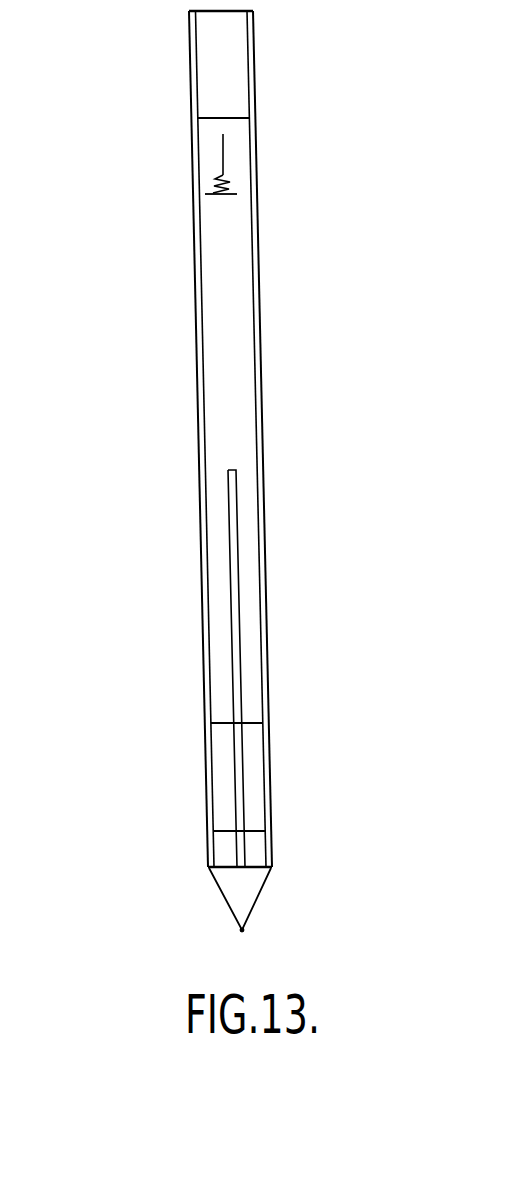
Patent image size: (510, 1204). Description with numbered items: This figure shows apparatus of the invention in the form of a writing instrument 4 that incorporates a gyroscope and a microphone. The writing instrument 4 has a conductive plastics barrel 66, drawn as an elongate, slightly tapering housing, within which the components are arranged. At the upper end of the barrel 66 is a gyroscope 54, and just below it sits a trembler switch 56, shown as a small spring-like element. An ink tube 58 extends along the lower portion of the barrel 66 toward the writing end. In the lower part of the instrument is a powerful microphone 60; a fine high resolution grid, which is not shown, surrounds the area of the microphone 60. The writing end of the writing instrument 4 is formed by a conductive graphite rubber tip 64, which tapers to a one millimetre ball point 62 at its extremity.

The writing instrument 4 is at (145, 222).
The gyroscope 54 is at (230, 71).
The trembler switch 56 is at (225, 158).
The ink tube 58 is at (233, 613).
The microphone 60 is at (255, 783).
The ball point 62 is at (242, 930).
The conductive graphite rubber tip 64 is at (223, 888).
The conductive plastics barrel 66 is at (263, 433).